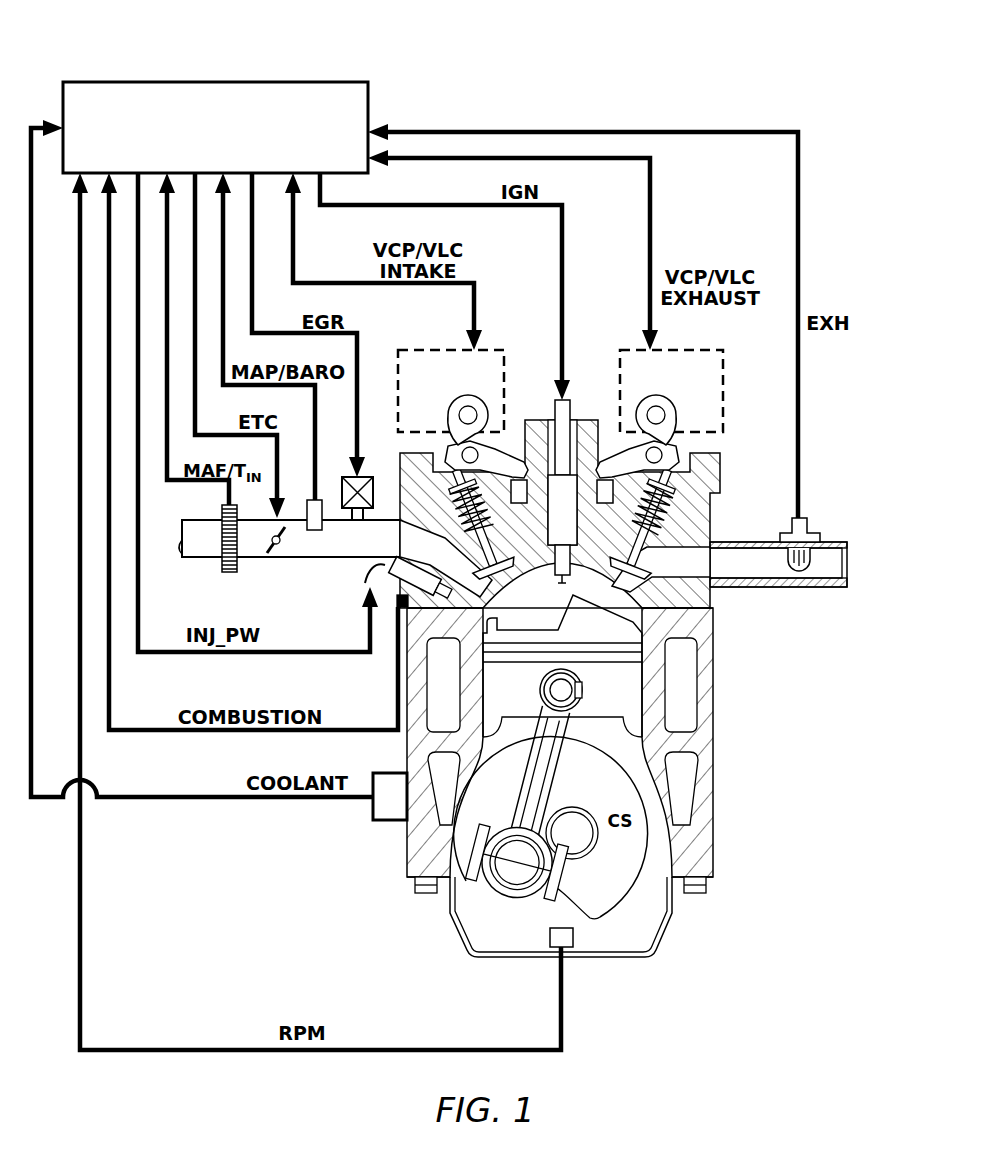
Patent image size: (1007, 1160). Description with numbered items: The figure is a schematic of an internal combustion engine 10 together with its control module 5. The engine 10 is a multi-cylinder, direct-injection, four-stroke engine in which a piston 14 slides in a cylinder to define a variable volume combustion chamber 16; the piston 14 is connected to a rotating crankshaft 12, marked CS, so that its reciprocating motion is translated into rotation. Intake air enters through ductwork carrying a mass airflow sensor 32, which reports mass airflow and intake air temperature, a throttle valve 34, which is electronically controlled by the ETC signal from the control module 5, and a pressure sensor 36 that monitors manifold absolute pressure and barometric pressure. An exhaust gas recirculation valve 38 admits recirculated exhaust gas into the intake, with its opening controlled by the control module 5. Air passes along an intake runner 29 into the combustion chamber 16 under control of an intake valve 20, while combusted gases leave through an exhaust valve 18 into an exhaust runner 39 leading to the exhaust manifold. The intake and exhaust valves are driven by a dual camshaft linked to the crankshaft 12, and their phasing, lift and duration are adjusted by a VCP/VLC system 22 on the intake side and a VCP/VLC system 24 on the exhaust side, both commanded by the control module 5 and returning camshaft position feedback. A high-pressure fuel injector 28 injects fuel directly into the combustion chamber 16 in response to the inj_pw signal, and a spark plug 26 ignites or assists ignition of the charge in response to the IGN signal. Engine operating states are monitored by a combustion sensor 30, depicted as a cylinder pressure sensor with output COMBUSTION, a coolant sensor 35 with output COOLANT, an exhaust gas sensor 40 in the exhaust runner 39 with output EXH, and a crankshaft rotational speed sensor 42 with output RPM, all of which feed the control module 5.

The control module 5 is at (325, 85).
The internal combustion engine 10 is at (705, 748).
The crankshaft 12 is at (613, 893).
The piston 14 is at (582, 690).
The combustion chamber 16 is at (562, 665).
The exhaust valve 18 is at (640, 571).
The intake valve 20 is at (473, 563).
The VCP/VLC system for the engine intake 22 is at (493, 350).
The VCP/VLC system for the engine exhaust 24 is at (723, 400).
The spark plug 26 is at (580, 350).
The fuel injector 28 is at (357, 588).
The intake runner 29 is at (387, 527).
The combustion sensor 30 is at (397, 603).
The mass airflow sensor 32 is at (235, 570).
The throttle valve 34 is at (275, 558).
The coolant sensor 35 is at (388, 800).
The pressure sensor 36 is at (314, 530).
The exhaust gas recirculation valve 38 is at (347, 510).
The exhaust runner 39 is at (700, 557).
The exhaust gas sensor 40 is at (808, 528).
The crankshaft rotational speed sensor 42 is at (555, 940).